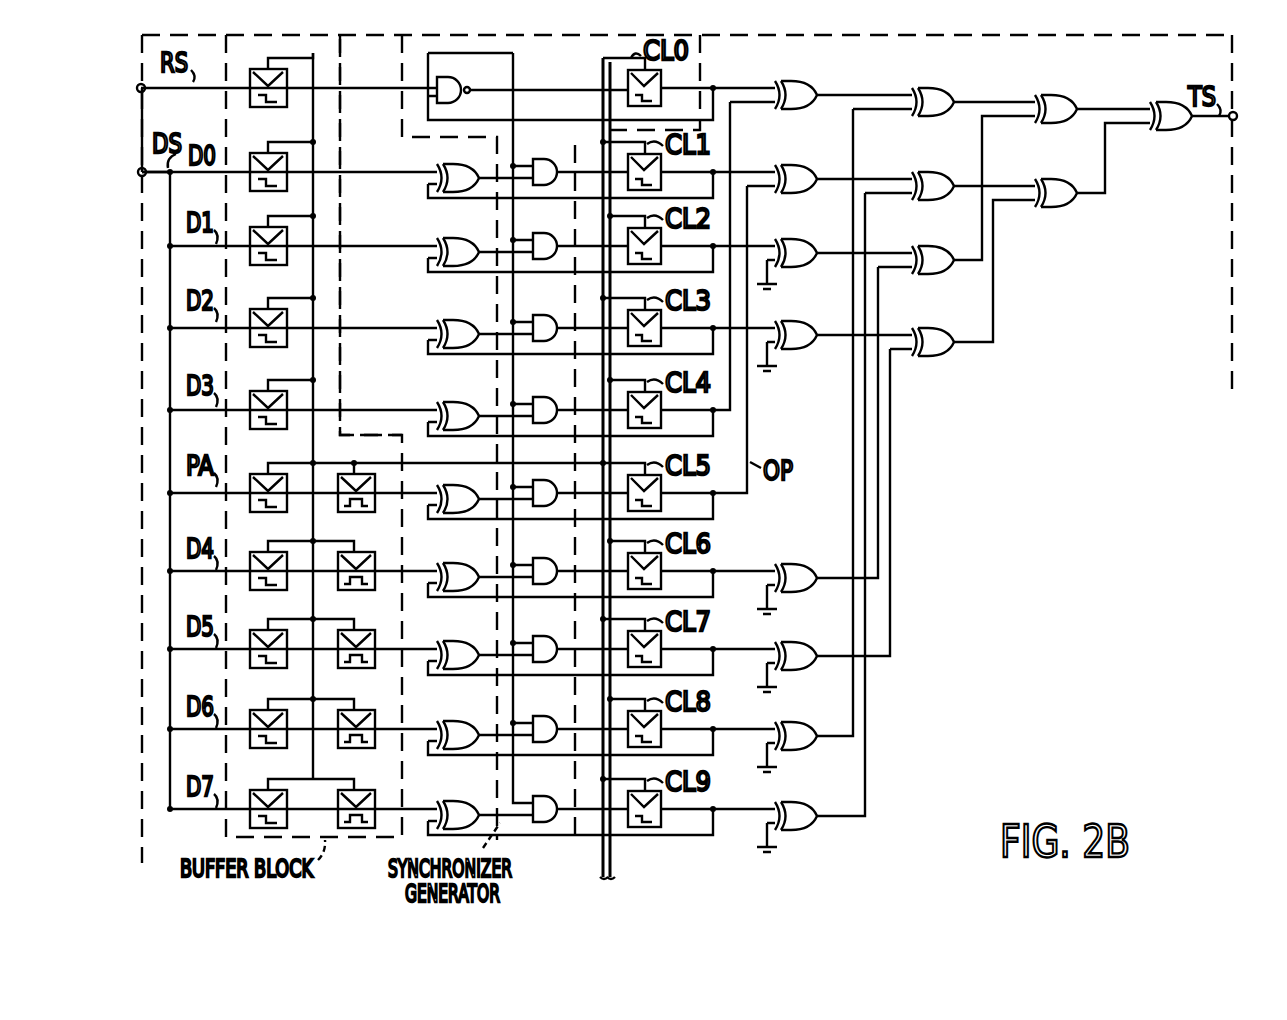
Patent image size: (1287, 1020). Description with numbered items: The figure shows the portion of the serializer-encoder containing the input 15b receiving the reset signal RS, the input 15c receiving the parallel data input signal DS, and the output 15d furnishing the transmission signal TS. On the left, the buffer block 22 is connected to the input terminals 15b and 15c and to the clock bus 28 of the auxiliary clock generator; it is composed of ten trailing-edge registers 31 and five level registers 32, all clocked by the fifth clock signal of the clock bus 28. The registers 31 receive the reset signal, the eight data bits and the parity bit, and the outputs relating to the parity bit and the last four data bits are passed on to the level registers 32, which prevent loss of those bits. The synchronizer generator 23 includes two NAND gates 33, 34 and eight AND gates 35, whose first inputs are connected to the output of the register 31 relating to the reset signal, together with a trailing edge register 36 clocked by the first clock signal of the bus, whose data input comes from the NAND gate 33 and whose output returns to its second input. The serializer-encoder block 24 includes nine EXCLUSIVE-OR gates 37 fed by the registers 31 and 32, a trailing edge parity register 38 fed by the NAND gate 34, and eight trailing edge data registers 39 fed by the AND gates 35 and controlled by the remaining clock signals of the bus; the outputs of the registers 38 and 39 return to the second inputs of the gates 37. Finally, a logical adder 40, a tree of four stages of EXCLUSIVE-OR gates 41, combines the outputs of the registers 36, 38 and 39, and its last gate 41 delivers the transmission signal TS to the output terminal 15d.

The input 15b is at (138, 91).
The input 15c is at (139, 177).
The output 15d is at (1236, 122).
The buffer block 22 is at (342, 274).
The synchronizer generator 23 is at (402, 132).
The serializer-encoder block 24 is at (1047, 669).
The clock bus 28 is at (603, 868).
The registers 31 is at (268, 106).
The level registers 32 is at (376, 510).
The NAND gate 33 is at (450, 71).
The NAND gate 34 is at (560, 508).
The AND gates 35 is at (524, 162).
The trailing edge register 36 is at (657, 100).
The EXCLUSIVE-OR gates 37 is at (448, 240).
The trailing edge parity register 38 is at (660, 496).
The trailing edge data registers 39 is at (662, 828).
The logical adder 40 is at (1072, 327).
The EXCLUSIVE-OR gates 41 is at (796, 84).